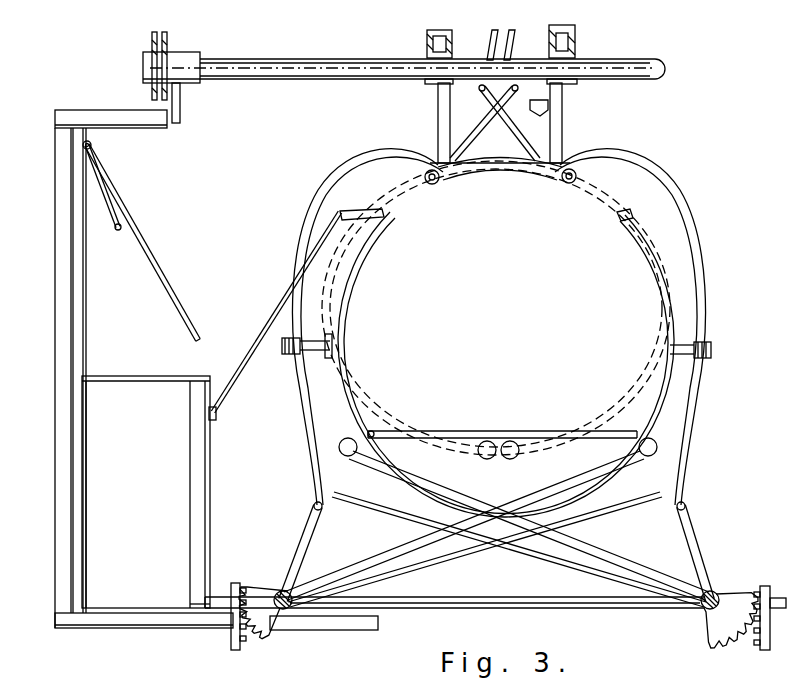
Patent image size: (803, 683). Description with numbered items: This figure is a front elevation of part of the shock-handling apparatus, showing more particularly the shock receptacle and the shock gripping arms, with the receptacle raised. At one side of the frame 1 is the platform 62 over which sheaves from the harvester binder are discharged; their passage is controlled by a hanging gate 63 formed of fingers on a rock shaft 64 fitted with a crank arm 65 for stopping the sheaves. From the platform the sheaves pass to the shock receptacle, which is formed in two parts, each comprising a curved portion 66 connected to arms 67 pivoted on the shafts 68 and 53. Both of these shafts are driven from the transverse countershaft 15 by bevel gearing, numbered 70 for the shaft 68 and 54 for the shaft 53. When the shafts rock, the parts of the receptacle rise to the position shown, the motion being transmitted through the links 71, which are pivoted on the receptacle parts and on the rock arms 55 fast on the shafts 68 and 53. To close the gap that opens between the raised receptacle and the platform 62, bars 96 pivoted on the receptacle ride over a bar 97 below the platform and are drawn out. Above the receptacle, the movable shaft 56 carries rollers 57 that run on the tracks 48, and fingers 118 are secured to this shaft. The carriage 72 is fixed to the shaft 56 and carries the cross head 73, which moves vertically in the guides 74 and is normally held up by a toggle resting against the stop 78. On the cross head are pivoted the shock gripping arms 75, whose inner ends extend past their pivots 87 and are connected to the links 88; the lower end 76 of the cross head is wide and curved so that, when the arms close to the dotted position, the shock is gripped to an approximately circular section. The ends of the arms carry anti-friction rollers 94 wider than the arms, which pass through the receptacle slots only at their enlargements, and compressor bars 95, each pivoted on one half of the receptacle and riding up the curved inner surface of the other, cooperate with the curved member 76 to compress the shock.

The frame 1 is at (54, 233).
The countershaft 15 is at (500, 611).
The tracks 48 is at (156, 117).
The second shaft 53 is at (717, 592).
The bevel gearing 54 is at (705, 626).
The rock arms 55 is at (308, 545).
The movable shaft 56 is at (637, 82).
The rollers 57 is at (166, 36).
The platform 62 is at (150, 382).
The hanging gate 63 is at (173, 288).
The rock shaft 64 is at (93, 148).
The crank arm 65 is at (122, 224).
The curved portion 66 is at (400, 473).
The arms 67 is at (527, 545).
The shaft 68 is at (280, 592).
The bevel gearing 70 is at (275, 636).
The links 71 is at (697, 420).
The carriage 72 is at (578, 52).
The cross head 73 is at (438, 125).
The guides 74 is at (427, 38).
The shock gripping arms 75 is at (700, 290).
The lower end of the cross head 76 is at (517, 176).
The stop 78 is at (549, 113).
The pivots 87 is at (434, 184).
The links 88 is at (503, 31).
The anti-friction rollers 94 is at (353, 456).
The compressor bars 95 is at (447, 430).
The bars 96 is at (236, 372).
The bar 97 is at (218, 417).
The fingers 118 is at (182, 115).